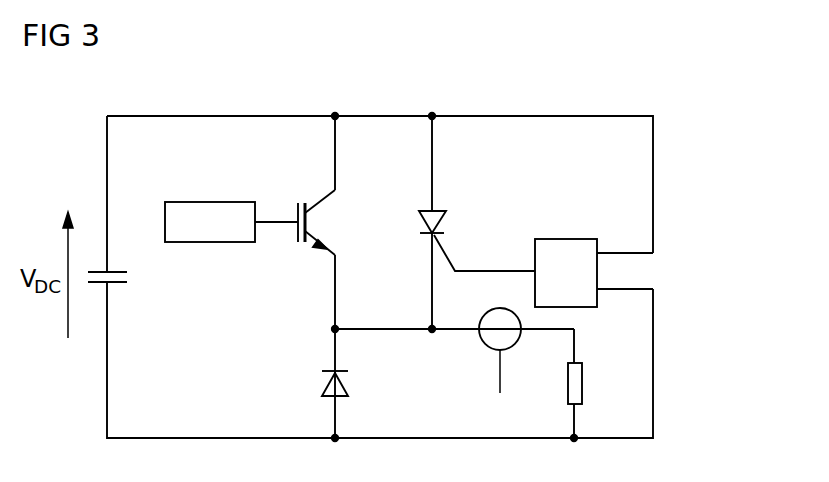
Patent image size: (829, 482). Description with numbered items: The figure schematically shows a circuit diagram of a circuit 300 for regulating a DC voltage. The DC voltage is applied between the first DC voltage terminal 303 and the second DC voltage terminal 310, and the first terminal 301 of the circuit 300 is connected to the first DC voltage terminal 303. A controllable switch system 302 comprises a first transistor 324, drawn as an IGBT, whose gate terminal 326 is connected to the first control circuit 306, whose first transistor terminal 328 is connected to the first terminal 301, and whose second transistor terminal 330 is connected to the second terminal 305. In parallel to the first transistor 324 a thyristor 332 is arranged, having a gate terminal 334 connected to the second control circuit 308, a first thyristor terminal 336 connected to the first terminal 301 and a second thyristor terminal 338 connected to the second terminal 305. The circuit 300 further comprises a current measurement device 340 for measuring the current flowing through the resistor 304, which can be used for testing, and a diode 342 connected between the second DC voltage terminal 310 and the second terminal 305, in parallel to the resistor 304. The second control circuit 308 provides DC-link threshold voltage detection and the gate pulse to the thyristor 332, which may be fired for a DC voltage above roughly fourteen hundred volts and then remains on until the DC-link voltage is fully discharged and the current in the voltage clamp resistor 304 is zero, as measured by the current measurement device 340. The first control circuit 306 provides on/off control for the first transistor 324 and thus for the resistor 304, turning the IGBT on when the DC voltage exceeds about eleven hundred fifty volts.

The circuit 300 is at (598, 73).
The controllable switch system 302 is at (270, 103).
The first terminal 301 is at (334, 119).
The first DC voltage terminal 303 is at (110, 271).
The resistor 304 is at (583, 385).
The second terminal 305 is at (332, 329).
The first control circuit 306 is at (211, 202).
The second control circuit 308 is at (565, 239).
The second DC voltage terminal 310 is at (112, 284).
The first transistor 324 is at (309, 222).
The gate terminal 326 is at (297, 232).
The first transistor terminal 328 is at (335, 180).
The second transistor terminal 330 is at (336, 262).
The thyristor 332 is at (440, 222).
The gate terminal 334 is at (447, 259).
The first thyristor terminal 336 is at (432, 168).
The second thyristor terminal 338 is at (432, 291).
The current measurement device 340 is at (485, 344).
The diode 342 is at (324, 381).